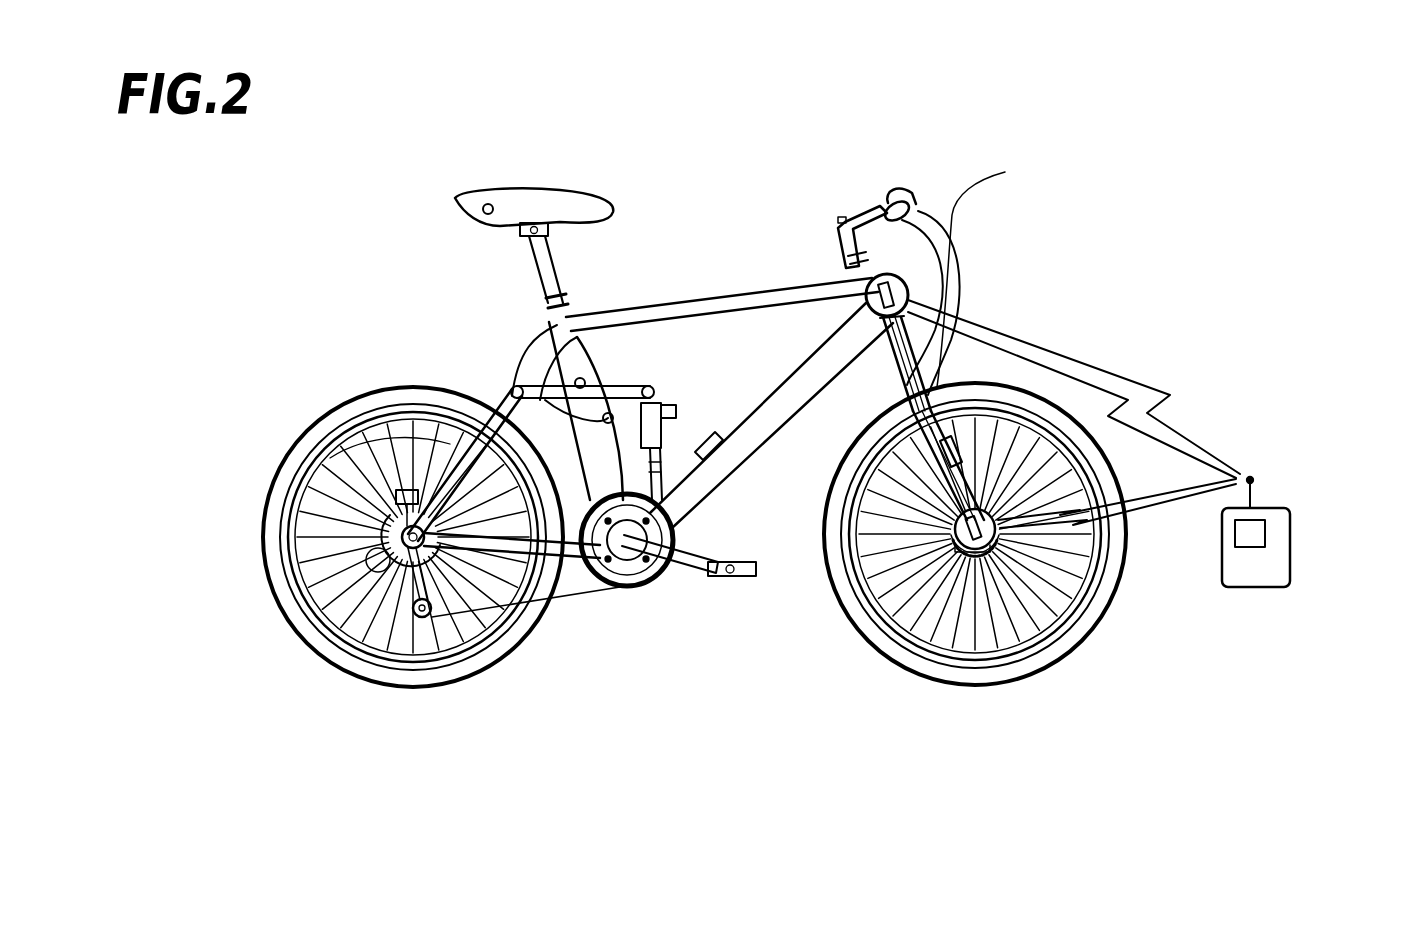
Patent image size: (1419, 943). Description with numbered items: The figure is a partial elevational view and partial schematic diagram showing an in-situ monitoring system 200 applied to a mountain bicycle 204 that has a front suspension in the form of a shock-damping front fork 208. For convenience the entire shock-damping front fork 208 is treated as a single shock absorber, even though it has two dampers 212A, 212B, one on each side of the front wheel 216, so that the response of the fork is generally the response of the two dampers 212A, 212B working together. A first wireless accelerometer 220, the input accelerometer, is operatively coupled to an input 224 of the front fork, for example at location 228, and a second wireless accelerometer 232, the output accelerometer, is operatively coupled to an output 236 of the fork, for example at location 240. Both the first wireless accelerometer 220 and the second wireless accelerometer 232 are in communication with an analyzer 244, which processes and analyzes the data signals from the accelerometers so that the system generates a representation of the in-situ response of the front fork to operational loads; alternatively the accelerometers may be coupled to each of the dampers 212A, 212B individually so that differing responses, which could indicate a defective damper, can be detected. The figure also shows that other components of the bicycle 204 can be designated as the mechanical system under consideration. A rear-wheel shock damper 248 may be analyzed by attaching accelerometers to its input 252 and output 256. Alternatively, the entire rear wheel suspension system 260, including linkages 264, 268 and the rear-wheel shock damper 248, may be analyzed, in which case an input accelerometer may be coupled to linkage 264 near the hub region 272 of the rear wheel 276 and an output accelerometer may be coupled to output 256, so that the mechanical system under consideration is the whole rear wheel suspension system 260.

The in-situ monitoring system 200 is at (1246, 396).
The mountain bicycle 204 is at (520, 178).
The shock-damping front fork 208 is at (972, 440).
The damper 212A is at (935, 350).
The damper 212B is at (927, 387).
The front wheel 216 is at (930, 582).
The first wireless accelerometer 220 is at (940, 550).
The input 224 is at (950, 555).
The location 228 is at (988, 560).
The second wireless accelerometer 232 is at (973, 269).
The output 236 is at (945, 275).
The location 240 is at (845, 262).
The analyzer 244 is at (1290, 496).
The rear-wheel shock damper 248 is at (686, 424).
The input 252 is at (338, 458).
The output 256 is at (713, 428).
The rear wheel suspension system 260 is at (482, 360).
The linkage 264 is at (401, 482).
The linkage 268 is at (540, 376).
The hub region 272 is at (350, 526).
The rear wheel 276 is at (358, 544).